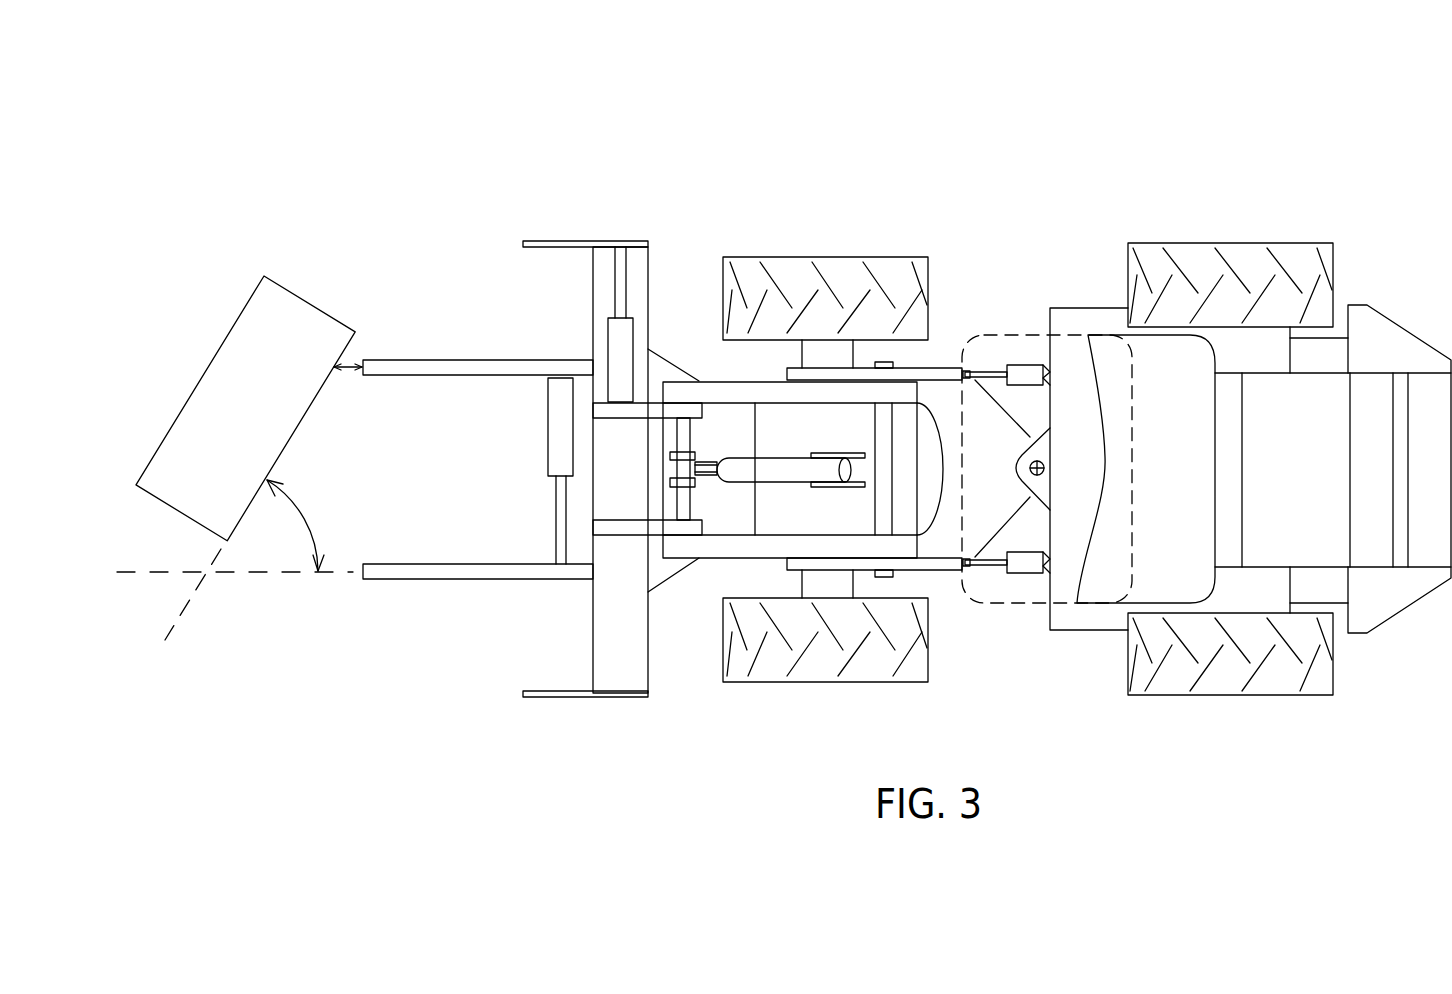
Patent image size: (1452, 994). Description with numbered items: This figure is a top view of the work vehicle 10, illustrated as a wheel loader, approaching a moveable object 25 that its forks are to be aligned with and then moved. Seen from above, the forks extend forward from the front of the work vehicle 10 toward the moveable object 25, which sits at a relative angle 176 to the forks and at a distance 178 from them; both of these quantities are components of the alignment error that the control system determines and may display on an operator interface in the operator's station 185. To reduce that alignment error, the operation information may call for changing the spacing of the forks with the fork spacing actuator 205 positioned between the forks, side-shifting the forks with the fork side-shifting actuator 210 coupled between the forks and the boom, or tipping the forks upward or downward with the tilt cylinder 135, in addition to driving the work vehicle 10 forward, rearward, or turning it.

The work vehicle 10 is at (1087, 371).
The moveable object 25 is at (228, 335).
The tilt cylinder 135 is at (775, 472).
The relative angle 176 is at (303, 514).
The distance 178 is at (347, 370).
The operator's station 185 is at (1132, 412).
The fork spacing actuator 205 is at (561, 441).
The fork side-shifting actuator 210 is at (625, 338).